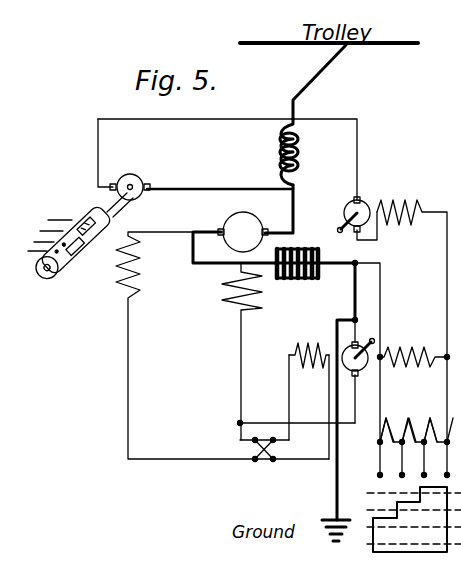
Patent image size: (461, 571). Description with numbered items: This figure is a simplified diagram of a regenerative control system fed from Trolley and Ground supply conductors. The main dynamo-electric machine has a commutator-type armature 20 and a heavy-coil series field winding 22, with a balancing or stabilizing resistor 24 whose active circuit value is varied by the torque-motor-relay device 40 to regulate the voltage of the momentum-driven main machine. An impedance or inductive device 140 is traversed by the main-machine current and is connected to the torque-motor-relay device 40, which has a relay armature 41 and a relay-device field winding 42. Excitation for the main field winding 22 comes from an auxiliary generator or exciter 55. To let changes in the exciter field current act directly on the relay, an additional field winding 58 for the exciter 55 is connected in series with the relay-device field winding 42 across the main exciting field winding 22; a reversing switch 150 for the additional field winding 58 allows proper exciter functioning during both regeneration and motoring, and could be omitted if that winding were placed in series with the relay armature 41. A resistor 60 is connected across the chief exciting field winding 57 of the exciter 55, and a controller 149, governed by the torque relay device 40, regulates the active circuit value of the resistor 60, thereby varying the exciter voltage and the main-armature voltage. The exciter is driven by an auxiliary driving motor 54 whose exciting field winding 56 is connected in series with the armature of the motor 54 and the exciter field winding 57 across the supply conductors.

The commutator-type armature 20 is at (255, 220).
The field winding 22 is at (270, 296).
The balancing or stabilizing resistor 24 is at (310, 242).
The torque-motor-relay device 40 is at (78, 192).
The relay armature 41 is at (142, 178).
The relay-device field winding 42 is at (141, 278).
The auxiliary driving motor 54 is at (345, 205).
The auxiliary generator or exciter 55 is at (363, 370).
The exciting field winding 56 is at (398, 196).
The chief exciting field winding 57 is at (409, 348).
The additional field winding 58 is at (300, 343).
The resistor 60 is at (416, 410).
The impedance or inductive device 140 is at (305, 157).
The controller 149 is at (436, 552).
The reversing switch 150 is at (264, 459).